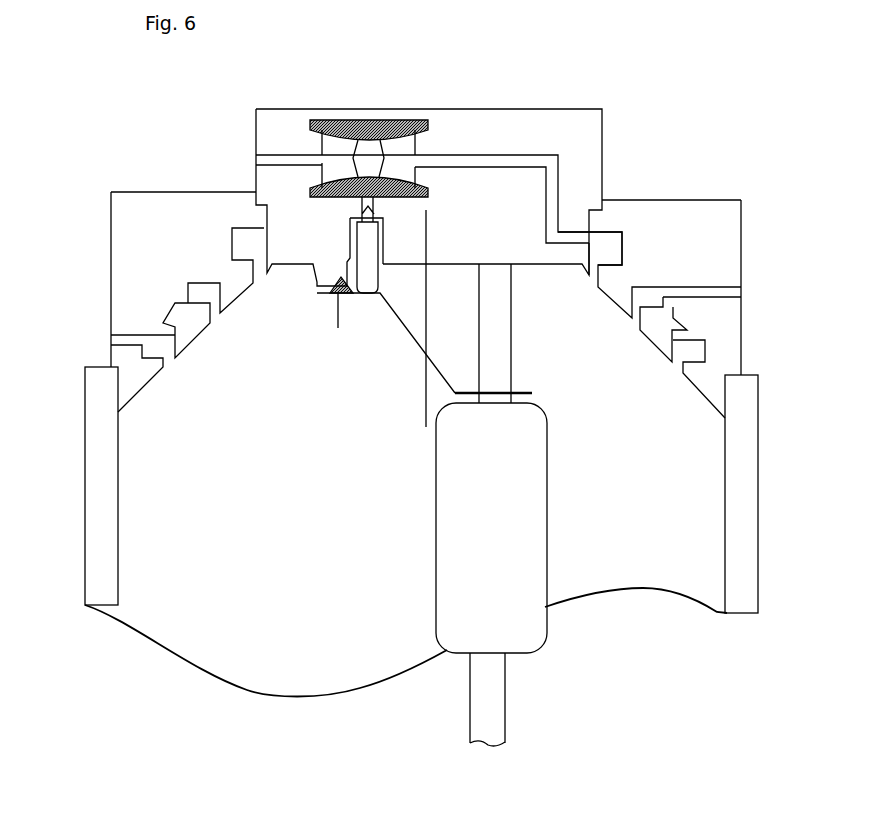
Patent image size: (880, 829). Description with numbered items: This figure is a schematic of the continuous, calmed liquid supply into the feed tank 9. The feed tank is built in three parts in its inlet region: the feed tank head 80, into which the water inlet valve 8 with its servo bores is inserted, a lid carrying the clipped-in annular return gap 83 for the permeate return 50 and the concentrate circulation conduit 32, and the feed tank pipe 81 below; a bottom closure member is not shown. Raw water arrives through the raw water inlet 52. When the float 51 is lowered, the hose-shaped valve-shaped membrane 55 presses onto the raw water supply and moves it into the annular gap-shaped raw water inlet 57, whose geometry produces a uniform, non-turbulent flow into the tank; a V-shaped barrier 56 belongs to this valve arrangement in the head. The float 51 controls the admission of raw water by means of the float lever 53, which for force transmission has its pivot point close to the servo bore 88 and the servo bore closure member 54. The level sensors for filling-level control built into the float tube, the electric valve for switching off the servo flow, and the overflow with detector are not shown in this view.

The feed tank head 80 is at (580, 108).
The raw water inlet 52 is at (250, 155).
The hose-shaped valve-shaped membrane 55 is at (340, 122).
The V-shaped barrier 56 is at (383, 147).
The float-controlled inlet valve 8 is at (375, 127).
The servo bore 88 is at (362, 205).
The servo bore closure member 54 is at (379, 265).
The float lever 53 is at (401, 331).
The annular gap-shaped raw water inlet 57 is at (602, 245).
The permeate return 50 is at (741, 288).
The concentrate circulation conduit 32 is at (110, 335).
The feed tank permeate return annular gap 83 is at (197, 340).
The feed tank 9 is at (67, 547).
The feed tank pipe 81 is at (743, 512).
The float 51 is at (528, 642).